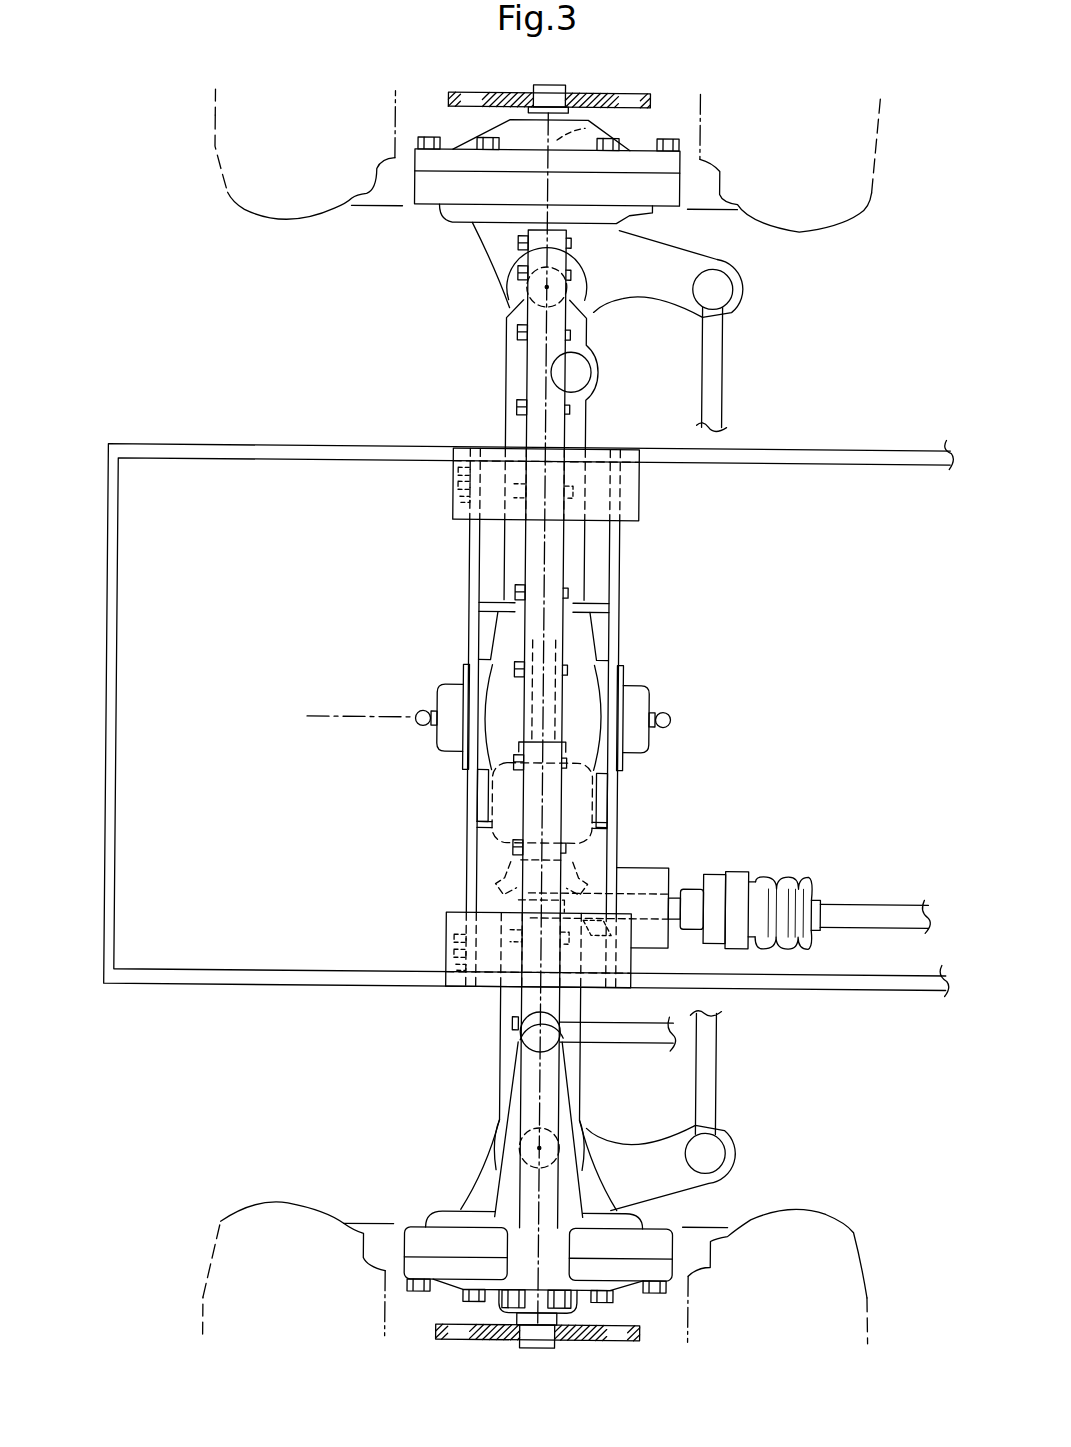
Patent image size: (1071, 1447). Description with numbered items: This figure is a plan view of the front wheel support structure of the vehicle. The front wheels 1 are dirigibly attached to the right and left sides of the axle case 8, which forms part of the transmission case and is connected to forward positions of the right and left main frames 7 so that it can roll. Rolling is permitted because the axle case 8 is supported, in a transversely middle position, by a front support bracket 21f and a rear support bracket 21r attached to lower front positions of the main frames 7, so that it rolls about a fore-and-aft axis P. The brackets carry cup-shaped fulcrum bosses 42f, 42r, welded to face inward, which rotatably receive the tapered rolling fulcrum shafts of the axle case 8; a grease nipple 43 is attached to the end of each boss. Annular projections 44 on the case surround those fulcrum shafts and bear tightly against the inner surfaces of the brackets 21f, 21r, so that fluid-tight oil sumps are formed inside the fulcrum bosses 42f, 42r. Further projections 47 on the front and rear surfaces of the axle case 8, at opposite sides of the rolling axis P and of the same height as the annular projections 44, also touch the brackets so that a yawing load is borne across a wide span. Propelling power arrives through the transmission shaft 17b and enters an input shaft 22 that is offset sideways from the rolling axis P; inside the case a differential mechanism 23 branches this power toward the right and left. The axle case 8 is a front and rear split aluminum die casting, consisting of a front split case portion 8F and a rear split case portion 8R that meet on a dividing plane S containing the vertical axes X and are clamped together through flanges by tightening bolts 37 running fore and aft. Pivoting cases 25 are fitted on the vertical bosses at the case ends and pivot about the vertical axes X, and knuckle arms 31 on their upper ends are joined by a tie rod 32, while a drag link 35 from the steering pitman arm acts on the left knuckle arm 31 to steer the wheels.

The front wheels 1 is at (210, 147).
The main frames 7 is at (214, 447).
The axle case 8 is at (598, 552).
The front split case portion 8F is at (506, 366).
The rear split case portion 8R is at (578, 418).
The transmission shaft 17b is at (853, 902).
The front support bracket 21f is at (470, 880).
The rear support bracket 21r is at (618, 793).
The input shaft 22 is at (678, 895).
The differential mechanism 23 is at (505, 805).
The pivoting cases 25 is at (453, 208).
The knuckle arms 31 is at (739, 289).
The tie rod 32 is at (719, 396).
The drag link 35 is at (615, 1046).
The tightening bolts 37 is at (514, 410).
The front fulcrum boss 42f is at (440, 749).
The rear fulcrum boss 42r is at (650, 749).
The grease nipple 43 is at (421, 712).
The annular projections 44 is at (483, 702).
The projections 47 is at (603, 603).
The dividing plane S is at (583, 133).
The vertical axes X is at (540, 288).
The fore-and-aft axis P is at (348, 716).